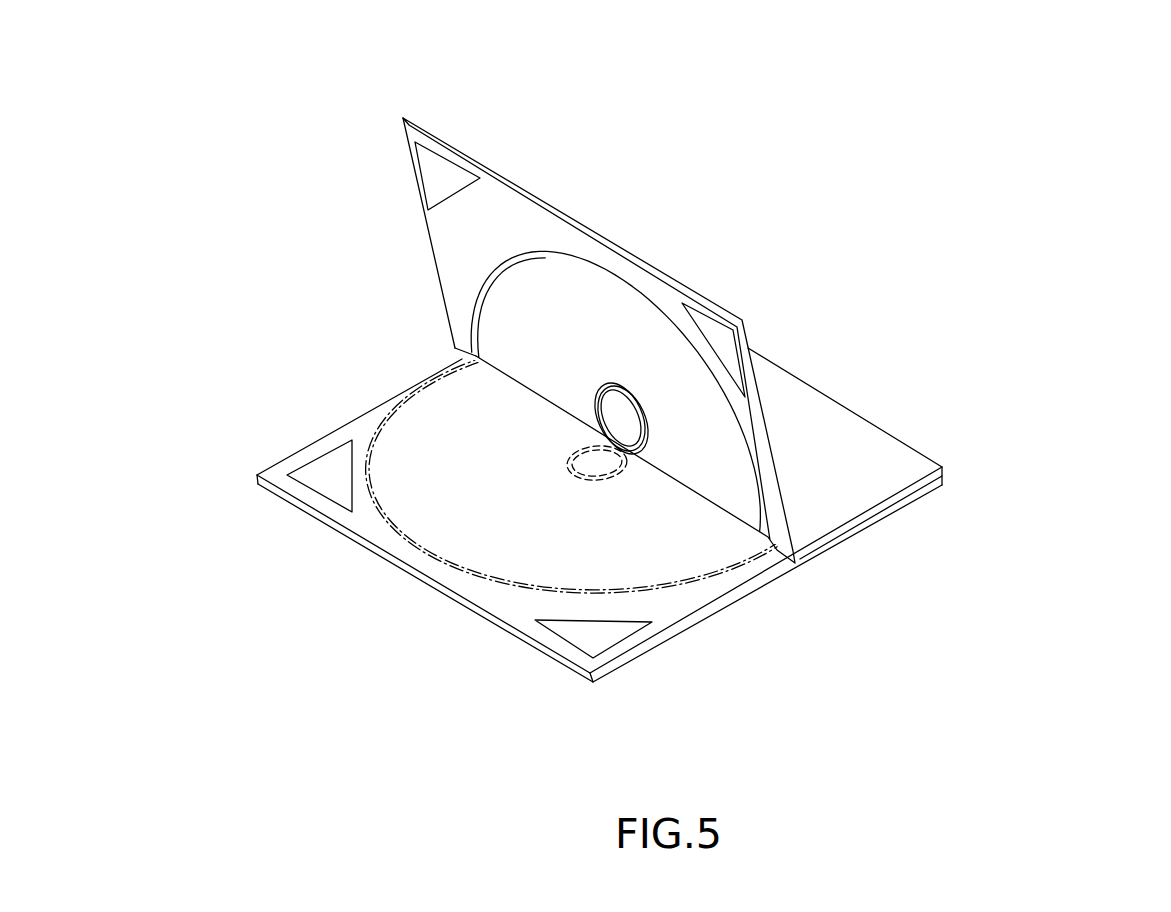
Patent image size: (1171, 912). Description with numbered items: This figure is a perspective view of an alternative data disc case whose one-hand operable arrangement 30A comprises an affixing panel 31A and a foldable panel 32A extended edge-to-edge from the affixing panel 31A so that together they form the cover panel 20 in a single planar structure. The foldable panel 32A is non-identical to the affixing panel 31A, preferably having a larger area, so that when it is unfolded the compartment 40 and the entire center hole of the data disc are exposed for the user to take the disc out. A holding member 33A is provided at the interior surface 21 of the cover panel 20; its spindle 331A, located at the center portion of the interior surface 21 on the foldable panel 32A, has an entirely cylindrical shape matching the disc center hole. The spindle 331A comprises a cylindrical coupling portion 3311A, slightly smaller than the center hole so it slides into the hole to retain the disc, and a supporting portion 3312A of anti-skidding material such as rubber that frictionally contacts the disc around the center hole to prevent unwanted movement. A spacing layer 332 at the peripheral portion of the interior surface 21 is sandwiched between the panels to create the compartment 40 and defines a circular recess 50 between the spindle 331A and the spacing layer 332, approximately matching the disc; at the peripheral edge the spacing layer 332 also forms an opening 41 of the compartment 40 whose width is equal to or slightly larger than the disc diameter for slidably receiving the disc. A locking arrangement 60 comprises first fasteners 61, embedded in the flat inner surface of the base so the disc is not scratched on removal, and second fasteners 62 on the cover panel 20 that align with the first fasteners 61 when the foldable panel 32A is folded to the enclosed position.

The cover panel 20 is at (680, 178).
The interior surface 21 is at (583, 293).
The one-hand operable arrangement 30A is at (980, 550).
The affixing panel 31A is at (850, 450).
The foldable panel 32A is at (727, 455).
The holding member 33A is at (363, 242).
The spacing layer 332 is at (462, 293).
The spindle 331A is at (452, 620).
The coupling portion 3311A is at (610, 420).
The supporting portion 3312A is at (640, 437).
The compartment 40 is at (600, 466).
The opening 41 is at (478, 407).
The recess 50 is at (510, 282).
The locking arrangement 60 is at (912, 212).
The first fastener 61 is at (317, 485).
The second fastener 62 is at (435, 178).